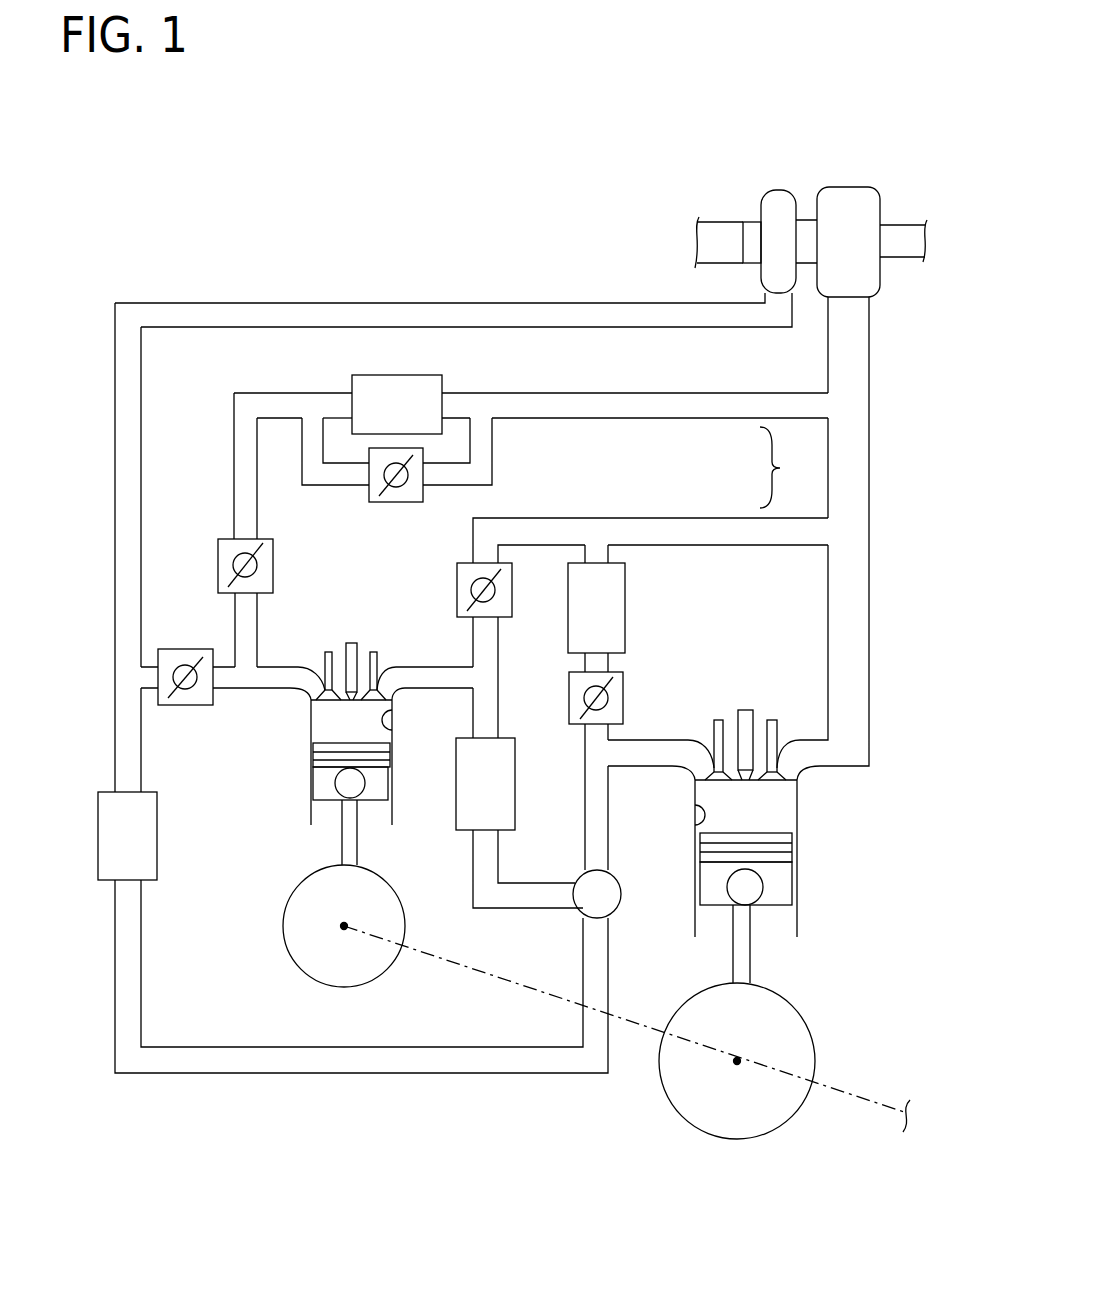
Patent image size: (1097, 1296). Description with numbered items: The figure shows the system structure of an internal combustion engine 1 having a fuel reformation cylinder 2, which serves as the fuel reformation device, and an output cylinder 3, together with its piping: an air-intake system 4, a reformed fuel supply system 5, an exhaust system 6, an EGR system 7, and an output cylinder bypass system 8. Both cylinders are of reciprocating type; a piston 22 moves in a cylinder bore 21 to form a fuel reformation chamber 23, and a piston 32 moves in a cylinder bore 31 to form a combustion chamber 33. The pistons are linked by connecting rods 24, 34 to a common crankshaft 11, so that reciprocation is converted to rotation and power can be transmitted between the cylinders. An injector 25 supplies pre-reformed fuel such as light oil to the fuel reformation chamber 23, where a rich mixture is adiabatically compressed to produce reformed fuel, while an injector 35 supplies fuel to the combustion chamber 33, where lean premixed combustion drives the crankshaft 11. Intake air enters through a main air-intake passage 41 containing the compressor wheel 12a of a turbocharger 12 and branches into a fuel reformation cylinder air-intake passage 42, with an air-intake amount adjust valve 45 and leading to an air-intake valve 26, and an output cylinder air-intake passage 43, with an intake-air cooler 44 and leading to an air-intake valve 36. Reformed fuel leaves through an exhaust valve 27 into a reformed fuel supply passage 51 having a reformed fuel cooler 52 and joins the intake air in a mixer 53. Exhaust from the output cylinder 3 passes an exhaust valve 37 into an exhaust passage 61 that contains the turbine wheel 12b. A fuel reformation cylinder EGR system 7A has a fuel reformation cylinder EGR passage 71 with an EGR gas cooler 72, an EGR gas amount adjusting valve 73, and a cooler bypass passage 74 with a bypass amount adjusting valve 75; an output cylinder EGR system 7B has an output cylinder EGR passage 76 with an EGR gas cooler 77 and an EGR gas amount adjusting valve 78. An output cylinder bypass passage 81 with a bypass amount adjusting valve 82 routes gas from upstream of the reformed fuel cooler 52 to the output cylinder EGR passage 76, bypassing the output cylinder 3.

The internal combustion engine 1 is at (181, 175).
The fuel reformation cylinder 2 is at (303, 785).
The output cylinder 3 is at (800, 876).
The air-intake system 4 is at (246, 300).
The reformed fuel supply system 5 is at (471, 845).
The exhaust system 6 is at (874, 615).
The EGR system 7 is at (780, 467).
The fuel reformation cylinder EGR system 7A is at (662, 421).
The output cylinder EGR system 7B is at (662, 516).
The output cylinder bypass system 8 is at (547, 517).
The crankshaft 11 is at (450, 972).
The turbocharger 12 is at (807, 177).
The compressor wheel 12a is at (777, 200).
The turbine wheel 12b is at (852, 200).
The cylinder bore 21 is at (398, 715).
The piston 22 is at (388, 785).
The fuel reformation chamber 23 is at (311, 722).
The connecting rod 24 is at (345, 846).
The injector 25 is at (352, 643).
The air-intake valve 26 is at (330, 652).
The exhaust valve 27 is at (376, 652).
The cylinder bore 31 is at (697, 810).
The piston 32 is at (700, 890).
The combustion chamber 33 is at (790, 808).
The connecting rod 34 is at (750, 962).
The injector 35 is at (745, 710).
The air-intake valve 36 is at (718, 720).
The exhaust valve 37 is at (776, 720).
The main air-intake passage 41 is at (391, 302).
The fuel reformation cylinder air-intake passage 42 is at (290, 667).
The output cylinder air-intake passage 43 is at (662, 748).
The intake-air cooler 44 is at (148, 833).
The air-intake amount adjust valve 45 is at (185, 707).
The reformed fuel supply passage 51 is at (472, 893).
The reformed fuel cooler 52 is at (515, 795).
The mixer 53 is at (590, 903).
The exhaust passage 61 is at (870, 688).
The fuel reformation cylinder EGR passage 71 is at (630, 393).
The EGR gas cooler 72 is at (382, 380).
The EGR gas amount adjusting valve 73 is at (222, 560).
The cooler bypass passage 74 is at (450, 486).
The bypass amount adjusting valve 75 is at (392, 502).
The output cylinder EGR passage 76 is at (762, 546).
The EGR gas cooler 77 is at (620, 605).
The EGR gas amount adjusting valve 78 is at (623, 687).
The output cylinder bypass passage 81 is at (499, 655).
The bypass amount adjusting valve 82 is at (513, 586).